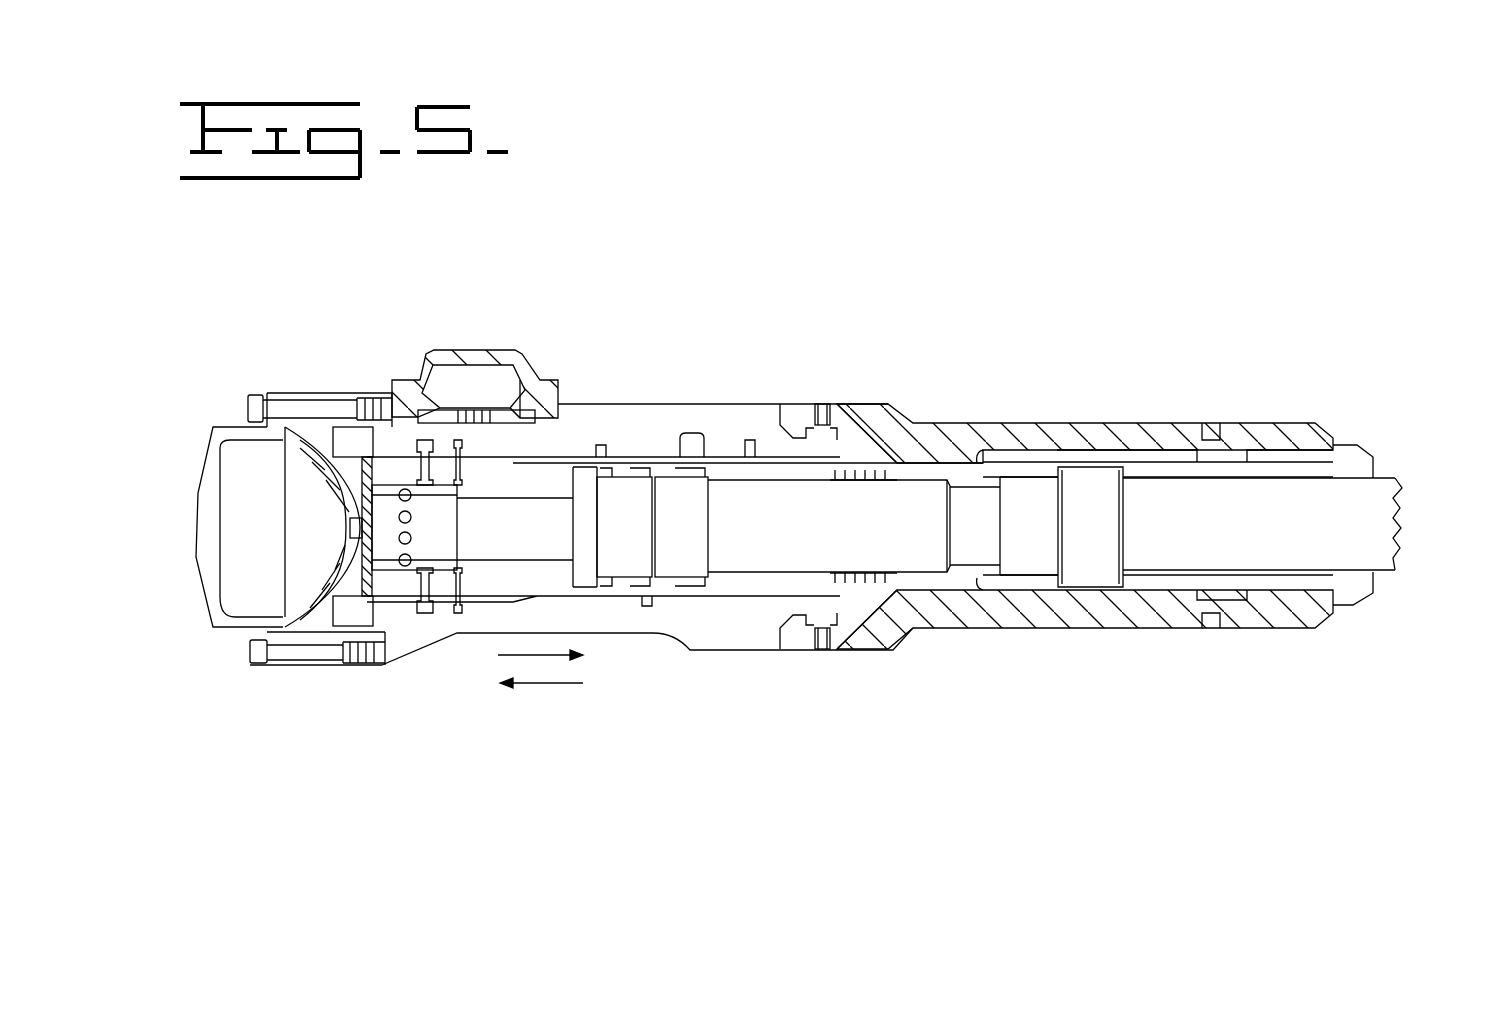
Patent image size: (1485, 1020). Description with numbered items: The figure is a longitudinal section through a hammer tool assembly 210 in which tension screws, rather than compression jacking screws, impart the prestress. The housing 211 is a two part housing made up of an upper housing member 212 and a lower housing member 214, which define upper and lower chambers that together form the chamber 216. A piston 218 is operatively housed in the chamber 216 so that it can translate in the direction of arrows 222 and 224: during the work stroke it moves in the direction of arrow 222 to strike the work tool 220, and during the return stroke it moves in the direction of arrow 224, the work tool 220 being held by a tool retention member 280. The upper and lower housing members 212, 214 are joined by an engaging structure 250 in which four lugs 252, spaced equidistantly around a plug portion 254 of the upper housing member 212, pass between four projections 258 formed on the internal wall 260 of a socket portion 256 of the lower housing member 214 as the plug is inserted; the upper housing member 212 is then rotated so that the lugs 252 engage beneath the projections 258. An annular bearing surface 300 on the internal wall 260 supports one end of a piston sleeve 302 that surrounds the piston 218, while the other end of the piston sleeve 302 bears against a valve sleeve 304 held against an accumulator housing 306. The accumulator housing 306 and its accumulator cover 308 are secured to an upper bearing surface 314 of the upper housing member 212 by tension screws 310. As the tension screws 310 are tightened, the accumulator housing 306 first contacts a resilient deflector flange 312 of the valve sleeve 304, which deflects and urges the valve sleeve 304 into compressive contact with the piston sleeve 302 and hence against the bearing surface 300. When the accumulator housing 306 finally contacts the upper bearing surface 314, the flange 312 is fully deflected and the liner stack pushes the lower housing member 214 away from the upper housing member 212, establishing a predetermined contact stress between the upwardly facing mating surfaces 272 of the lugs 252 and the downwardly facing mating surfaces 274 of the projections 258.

The tool assembly 210 is at (930, 355).
The housing 211 is at (1020, 440).
The upper housing member 212 is at (642, 412).
The lower housing member 214 is at (1173, 433).
The chamber 216 is at (962, 568).
The piston 218 is at (732, 548).
The work tool 220 is at (1360, 548).
The arrow 222 is at (500, 655).
The arrow 224 is at (535, 685).
The engaging structure 250 is at (843, 352).
The lugs 252 is at (850, 620).
The plug portion 254 is at (783, 630).
The socket portion 256 is at (852, 405).
The projections 258 is at (786, 413).
The internal wall 260 is at (860, 445).
The upwardly facing mating surfaces 272 is at (797, 433).
The downwardly facing mating surfaces 274 is at (813, 628).
The tool retention member 280 is at (1347, 457).
The annular bearing surface 300 is at (897, 630).
The piston sleeve 302 is at (718, 590).
The valve sleeve 304 is at (508, 467).
The accumulator housing 306 is at (318, 633).
The accumulator cover 308 is at (212, 597).
The tension screws 310 is at (248, 402).
The resilient deflector flange 312 is at (374, 458).
The upper bearing surface 314 is at (328, 428).